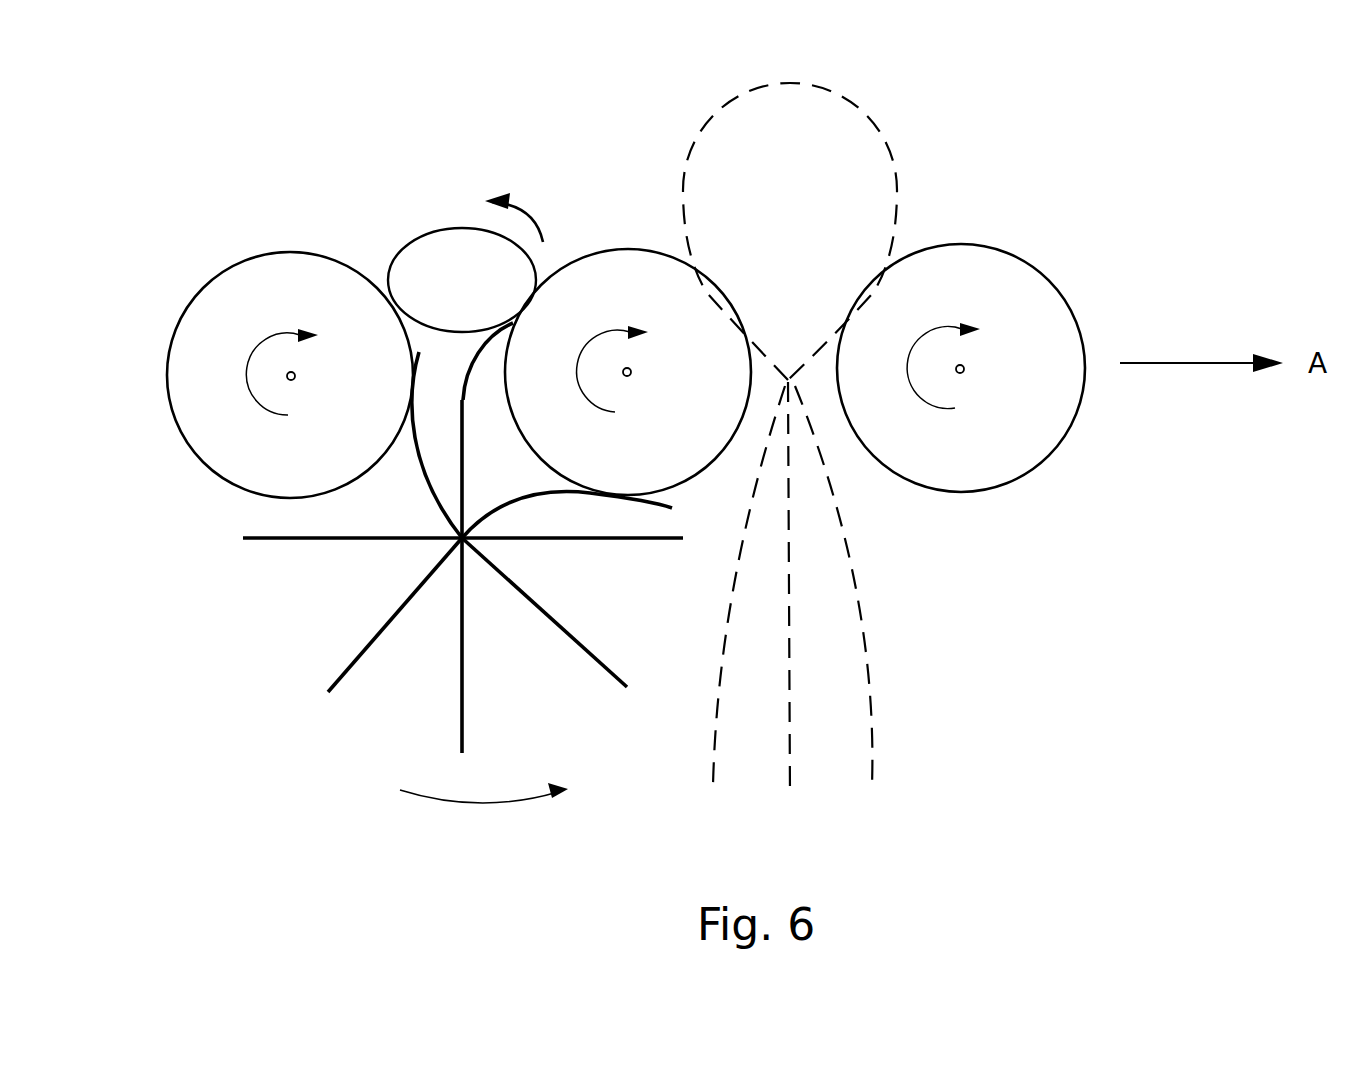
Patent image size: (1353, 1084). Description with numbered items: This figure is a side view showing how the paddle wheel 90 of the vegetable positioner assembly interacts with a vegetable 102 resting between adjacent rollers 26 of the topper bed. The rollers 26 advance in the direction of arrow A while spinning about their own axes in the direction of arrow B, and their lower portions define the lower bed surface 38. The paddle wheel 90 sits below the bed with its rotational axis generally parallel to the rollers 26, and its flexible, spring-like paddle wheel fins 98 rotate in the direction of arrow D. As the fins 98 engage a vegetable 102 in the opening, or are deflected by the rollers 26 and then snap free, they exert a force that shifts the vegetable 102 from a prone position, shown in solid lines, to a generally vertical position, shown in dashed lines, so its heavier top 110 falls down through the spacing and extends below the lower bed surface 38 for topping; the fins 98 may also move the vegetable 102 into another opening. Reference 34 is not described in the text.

The rollers 26 is at (243, 300).
The roller assembly 34 is at (322, 252).
The lower bed surface 38 is at (227, 482).
The paddle wheel 90 is at (328, 692).
The paddle wheel fins 98 is at (323, 543).
The vegetable 102 is at (430, 275).
The vegetable top 110 is at (847, 543).